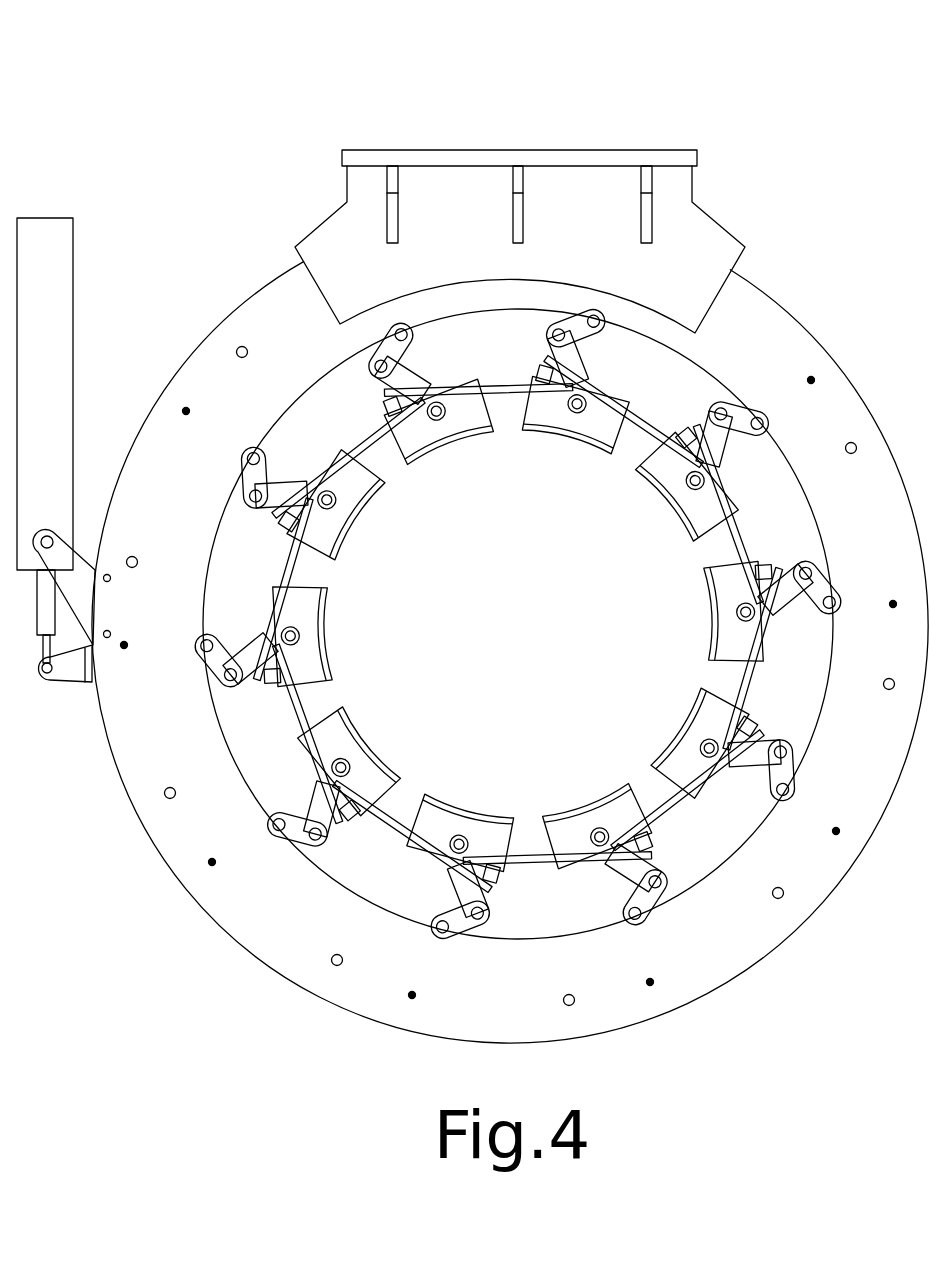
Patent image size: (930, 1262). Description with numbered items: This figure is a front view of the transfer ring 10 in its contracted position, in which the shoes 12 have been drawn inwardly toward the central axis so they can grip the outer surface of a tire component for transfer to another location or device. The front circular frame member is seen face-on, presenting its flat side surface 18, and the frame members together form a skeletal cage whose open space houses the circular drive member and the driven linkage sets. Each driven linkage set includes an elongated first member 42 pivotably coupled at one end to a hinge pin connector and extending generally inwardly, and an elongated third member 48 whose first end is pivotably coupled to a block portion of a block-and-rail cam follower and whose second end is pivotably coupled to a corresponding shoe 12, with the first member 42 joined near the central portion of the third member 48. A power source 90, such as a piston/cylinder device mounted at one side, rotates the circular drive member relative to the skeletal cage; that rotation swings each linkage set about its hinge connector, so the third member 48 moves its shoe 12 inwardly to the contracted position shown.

The transfer ring 10 is at (776, 102).
The shoe 12 is at (456, 806).
The inner flat side surface 18 is at (262, 925).
The first member 42 is at (262, 466).
The third member 48 is at (288, 494).
The power source 90 is at (60, 256).